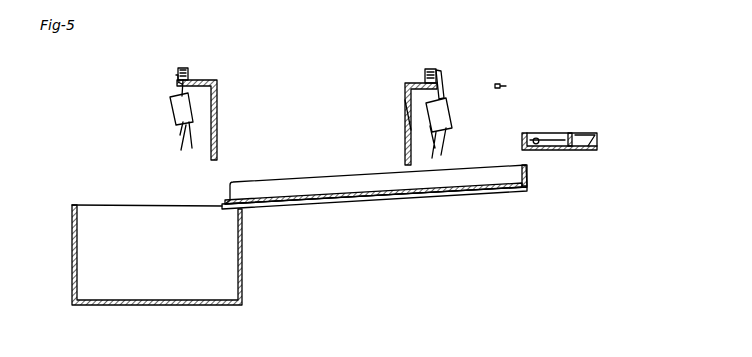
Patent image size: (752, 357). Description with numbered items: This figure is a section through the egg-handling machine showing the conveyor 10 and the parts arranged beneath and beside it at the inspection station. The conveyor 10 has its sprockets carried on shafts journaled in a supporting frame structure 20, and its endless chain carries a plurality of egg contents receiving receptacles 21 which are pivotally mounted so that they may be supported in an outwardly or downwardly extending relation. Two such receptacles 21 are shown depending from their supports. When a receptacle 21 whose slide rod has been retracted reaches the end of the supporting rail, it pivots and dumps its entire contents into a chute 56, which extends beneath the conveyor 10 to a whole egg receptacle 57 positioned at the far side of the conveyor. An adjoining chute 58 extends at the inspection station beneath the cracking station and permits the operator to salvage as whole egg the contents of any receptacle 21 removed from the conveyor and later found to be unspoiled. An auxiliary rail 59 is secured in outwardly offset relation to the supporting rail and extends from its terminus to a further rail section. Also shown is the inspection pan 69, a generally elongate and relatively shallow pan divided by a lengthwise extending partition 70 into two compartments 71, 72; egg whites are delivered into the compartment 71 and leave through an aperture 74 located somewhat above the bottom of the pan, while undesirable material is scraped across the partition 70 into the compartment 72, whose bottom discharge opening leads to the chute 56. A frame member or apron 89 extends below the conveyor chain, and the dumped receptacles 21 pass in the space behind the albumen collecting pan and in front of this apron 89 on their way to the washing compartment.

The conveyor 10 is at (187, 73).
The supporting frame structure 20 is at (203, 81).
The egg contents receiving receptacle 21 is at (172, 113).
The chute 56 is at (333, 183).
The whole egg receptacle 57 is at (90, 218).
The adjoining chute 58 is at (369, 193).
The auxiliary rail 59 is at (506, 86).
The inspection pan 69 is at (598, 143).
The partition 70 is at (571, 138).
The compartment 71 is at (559, 140).
The compartment 72 is at (585, 135).
The aperture 74 is at (537, 144).
The frame member or apron 89 is at (403, 114).